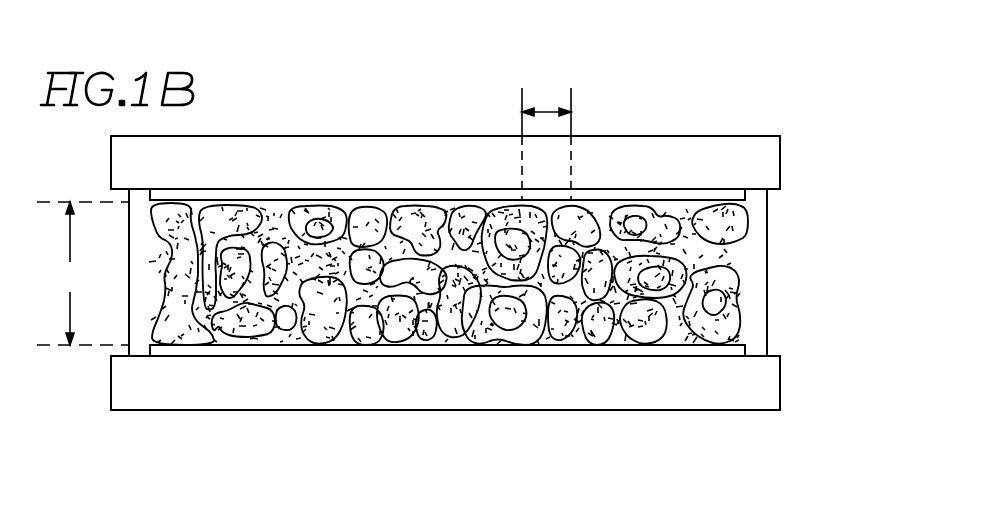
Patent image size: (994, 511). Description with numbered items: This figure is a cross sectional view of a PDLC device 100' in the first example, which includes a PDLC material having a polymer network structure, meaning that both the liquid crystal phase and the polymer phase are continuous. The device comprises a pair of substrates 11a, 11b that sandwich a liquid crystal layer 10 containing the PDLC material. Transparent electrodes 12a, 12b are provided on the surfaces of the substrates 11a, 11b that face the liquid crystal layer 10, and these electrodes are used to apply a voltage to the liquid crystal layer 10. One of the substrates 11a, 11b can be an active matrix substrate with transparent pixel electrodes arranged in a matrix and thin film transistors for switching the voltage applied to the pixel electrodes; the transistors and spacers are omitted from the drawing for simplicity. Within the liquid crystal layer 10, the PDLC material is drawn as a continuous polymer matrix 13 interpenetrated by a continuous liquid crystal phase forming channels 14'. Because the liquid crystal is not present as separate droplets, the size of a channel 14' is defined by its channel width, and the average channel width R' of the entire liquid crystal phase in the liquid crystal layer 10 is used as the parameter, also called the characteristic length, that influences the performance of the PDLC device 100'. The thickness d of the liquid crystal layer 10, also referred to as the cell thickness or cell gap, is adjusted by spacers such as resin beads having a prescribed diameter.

The PDLC device 100' is at (439, 249).
The substrate 11a is at (746, 152).
The substrate 11b is at (730, 395).
The transparent electrode 12a is at (297, 196).
The transparent electrode 12b is at (328, 354).
The polymer matrix 13 is at (572, 322).
The channel of a liquid crystal phase 14' is at (444, 337).
The liquid crystal layer 10 is at (753, 285).
The thickness of the liquid crystal layer d is at (82, 273).
The average channel width R' is at (555, 127).